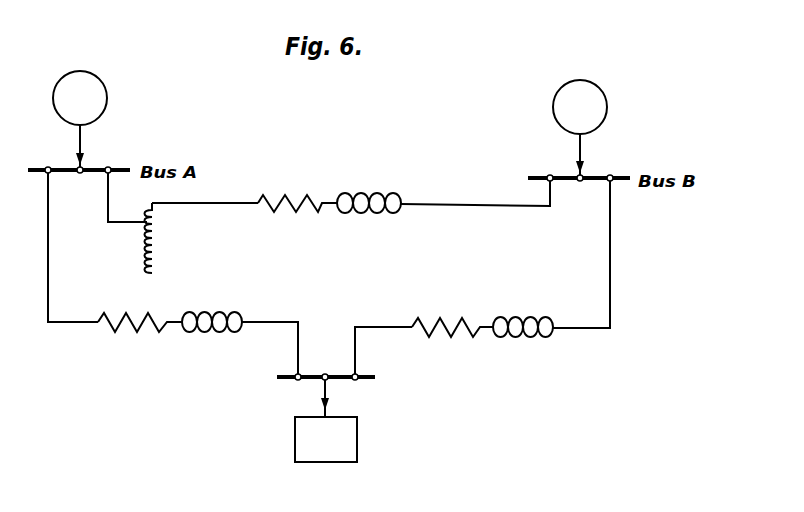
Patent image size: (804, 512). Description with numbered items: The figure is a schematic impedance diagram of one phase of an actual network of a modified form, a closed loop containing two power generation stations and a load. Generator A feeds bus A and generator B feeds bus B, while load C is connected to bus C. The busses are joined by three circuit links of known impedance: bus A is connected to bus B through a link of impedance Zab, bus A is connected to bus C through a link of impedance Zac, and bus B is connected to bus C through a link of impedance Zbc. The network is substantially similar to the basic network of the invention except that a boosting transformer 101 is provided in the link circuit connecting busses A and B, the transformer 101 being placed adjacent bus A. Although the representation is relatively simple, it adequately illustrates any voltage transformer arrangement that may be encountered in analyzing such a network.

The boosting transformer 101 is at (154, 253).
The generator A / bus A is at (80, 119).
The generator B / bus B is at (580, 128).
The load C / bus C is at (326, 421).
The impedance of circuit link between bus A and bus B Zab is at (329, 218).
The impedance of circuit link between bus A and bus C Zac is at (170, 336).
The impedance of circuit link between bus B and bus C Zbc is at (482, 342).